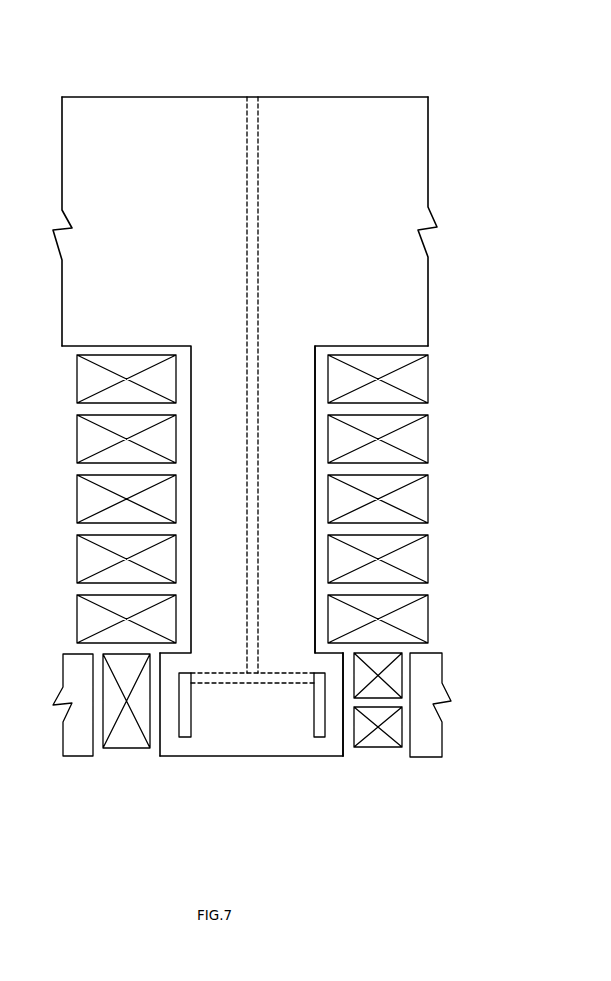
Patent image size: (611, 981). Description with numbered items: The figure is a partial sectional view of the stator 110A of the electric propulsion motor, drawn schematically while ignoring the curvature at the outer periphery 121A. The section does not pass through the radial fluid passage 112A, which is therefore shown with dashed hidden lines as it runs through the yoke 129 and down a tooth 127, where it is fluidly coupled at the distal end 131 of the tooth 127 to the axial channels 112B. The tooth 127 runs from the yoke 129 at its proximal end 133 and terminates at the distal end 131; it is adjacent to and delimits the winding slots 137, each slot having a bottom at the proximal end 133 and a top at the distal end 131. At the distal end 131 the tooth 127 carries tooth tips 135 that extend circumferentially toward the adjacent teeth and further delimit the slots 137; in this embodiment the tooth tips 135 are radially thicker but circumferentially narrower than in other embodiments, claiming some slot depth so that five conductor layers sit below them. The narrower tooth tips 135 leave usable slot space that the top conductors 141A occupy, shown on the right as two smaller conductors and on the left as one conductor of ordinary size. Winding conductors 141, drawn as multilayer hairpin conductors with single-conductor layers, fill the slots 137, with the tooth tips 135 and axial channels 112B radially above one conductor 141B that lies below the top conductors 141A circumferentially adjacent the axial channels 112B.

The stator 110A is at (156, 52).
The outer periphery 121A is at (210, 97).
The radial fluid passage 112A is at (258, 178).
The yoke 129 is at (415, 183).
The proximal end 133 is at (220, 350).
The tooth 127 is at (285, 432).
The winding slot 137 is at (321, 372).
The winding conductors 141 is at (488, 558).
The conductor 141B is at (428, 615).
The top conductors 141A is at (402, 727).
The axial channels 112B is at (183, 722).
The distal end 131 is at (271, 762).
The tooth tips 135 is at (320, 757).